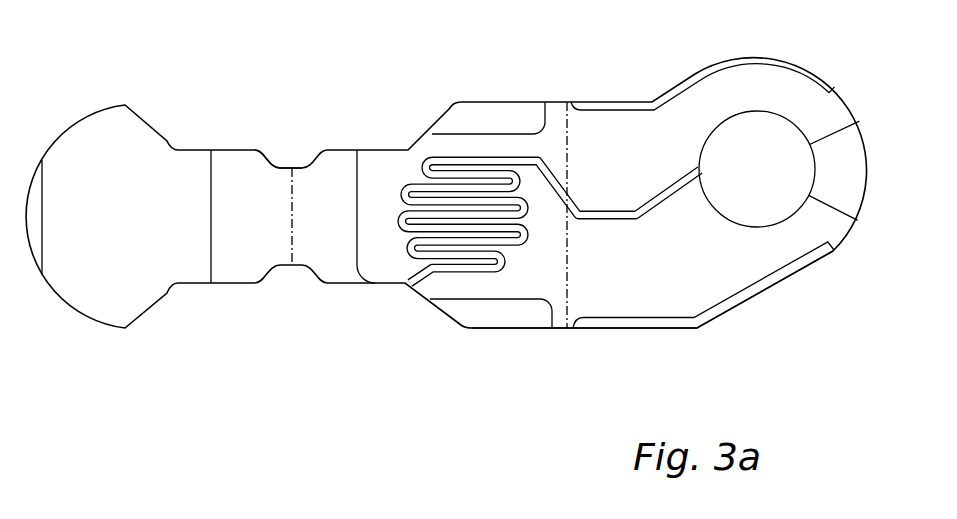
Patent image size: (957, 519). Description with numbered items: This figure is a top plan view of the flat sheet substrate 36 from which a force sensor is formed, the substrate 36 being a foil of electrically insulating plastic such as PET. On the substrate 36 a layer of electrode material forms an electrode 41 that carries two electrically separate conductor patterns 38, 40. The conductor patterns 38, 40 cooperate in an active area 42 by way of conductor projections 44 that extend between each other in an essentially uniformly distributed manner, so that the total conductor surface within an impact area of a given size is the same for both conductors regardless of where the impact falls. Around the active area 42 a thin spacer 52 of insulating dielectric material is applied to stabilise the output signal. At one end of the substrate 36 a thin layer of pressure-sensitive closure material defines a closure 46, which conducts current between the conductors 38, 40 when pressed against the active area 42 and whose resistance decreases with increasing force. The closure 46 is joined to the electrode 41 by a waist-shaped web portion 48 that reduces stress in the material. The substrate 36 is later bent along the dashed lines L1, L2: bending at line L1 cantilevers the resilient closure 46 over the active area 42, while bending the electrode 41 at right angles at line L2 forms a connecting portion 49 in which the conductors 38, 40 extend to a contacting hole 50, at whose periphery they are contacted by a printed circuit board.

The sheet substrate 36 is at (336, 147).
The first conductor pattern 38 is at (610, 133).
The second conductor pattern 40 is at (620, 278).
The electrode 41 is at (477, 328).
The active area 42 is at (441, 191).
The conductor projections 44 is at (485, 245).
The closure 46 is at (169, 141).
The web portion 48 is at (279, 164).
The connecting portion 49 is at (734, 312).
The contacting hole 50 is at (799, 131).
The spacer 52 is at (507, 116).
The first dashed bending line L1 is at (292, 248).
The second dashed bending line L2 is at (573, 118).